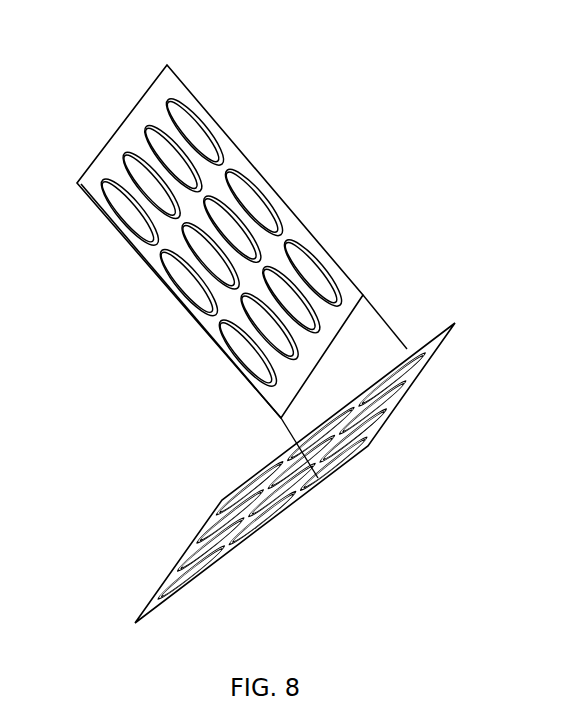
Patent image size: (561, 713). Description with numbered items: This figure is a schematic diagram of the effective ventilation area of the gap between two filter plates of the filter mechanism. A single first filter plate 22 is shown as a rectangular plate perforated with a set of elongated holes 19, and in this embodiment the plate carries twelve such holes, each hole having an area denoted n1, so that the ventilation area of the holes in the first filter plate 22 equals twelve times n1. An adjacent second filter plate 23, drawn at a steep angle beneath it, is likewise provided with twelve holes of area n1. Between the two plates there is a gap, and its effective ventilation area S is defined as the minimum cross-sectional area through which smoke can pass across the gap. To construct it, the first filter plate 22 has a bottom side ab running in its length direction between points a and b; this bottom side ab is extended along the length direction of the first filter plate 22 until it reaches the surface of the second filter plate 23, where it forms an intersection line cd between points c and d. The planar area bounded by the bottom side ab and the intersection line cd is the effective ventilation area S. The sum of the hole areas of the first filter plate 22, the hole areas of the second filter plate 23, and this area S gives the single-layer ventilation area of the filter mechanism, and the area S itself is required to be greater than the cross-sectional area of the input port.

The hole 19 is at (186, 128).
The first filter plate 22 is at (222, 241).
The second filter plate 23 is at (237, 540).
The area of a single hole n1 is at (133, 216).
The effective ventilation area of the gap S is at (357, 362).
The endpoint a of bottom side ab a is at (374, 290).
The endpoint b of bottom side ab b is at (271, 434).
The endpoint c of intersection line cd c is at (327, 492).
The endpoint d of intersection line cd d is at (414, 330).